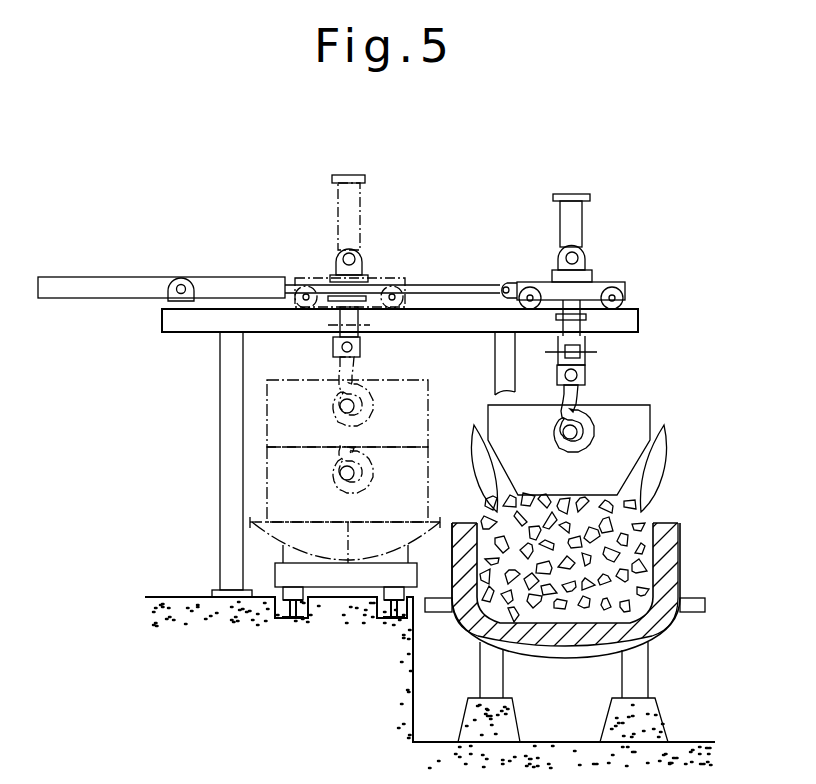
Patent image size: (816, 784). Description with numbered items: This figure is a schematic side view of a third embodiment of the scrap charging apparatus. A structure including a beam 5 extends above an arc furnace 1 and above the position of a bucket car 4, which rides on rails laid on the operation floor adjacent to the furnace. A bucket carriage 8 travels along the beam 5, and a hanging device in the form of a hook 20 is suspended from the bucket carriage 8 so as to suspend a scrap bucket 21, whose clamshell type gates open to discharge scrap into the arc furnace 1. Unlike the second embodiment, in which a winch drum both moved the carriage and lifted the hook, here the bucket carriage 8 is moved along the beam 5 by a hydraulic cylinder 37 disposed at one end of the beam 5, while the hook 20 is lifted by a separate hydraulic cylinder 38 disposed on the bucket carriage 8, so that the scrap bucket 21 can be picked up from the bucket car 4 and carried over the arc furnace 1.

The arc furnace 1 is at (681, 540).
The bucket car 4 is at (342, 580).
The beam 5 is at (192, 350).
The bucket carriage 8 is at (399, 279).
The hook 20 is at (590, 408).
The scrap bucket 21 is at (285, 475).
The hydraulic cylinder 37 is at (222, 288).
The hydraulic cylinder 38 is at (360, 200).